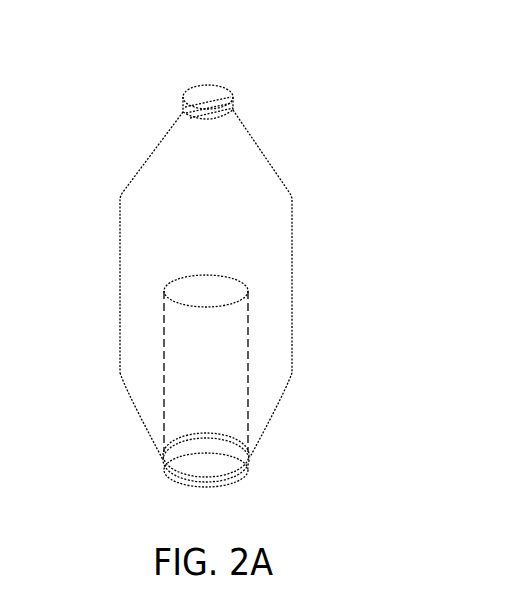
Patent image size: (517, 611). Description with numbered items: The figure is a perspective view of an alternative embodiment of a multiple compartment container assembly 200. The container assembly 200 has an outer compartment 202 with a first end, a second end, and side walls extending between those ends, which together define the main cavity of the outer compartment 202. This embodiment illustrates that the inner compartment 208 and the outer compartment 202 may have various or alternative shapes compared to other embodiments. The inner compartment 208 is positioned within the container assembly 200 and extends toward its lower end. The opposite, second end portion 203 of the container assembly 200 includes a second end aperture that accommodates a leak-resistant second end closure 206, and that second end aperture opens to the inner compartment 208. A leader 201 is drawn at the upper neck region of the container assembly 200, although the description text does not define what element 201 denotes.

The container assembly 200 is at (255, 251).
The top opening / neck cap 201 is at (163, 98).
The outer compartment 202 is at (292, 226).
The second end portion 203 is at (118, 400).
The second end closure 206 is at (247, 478).
The inner compartment 208 is at (248, 350).